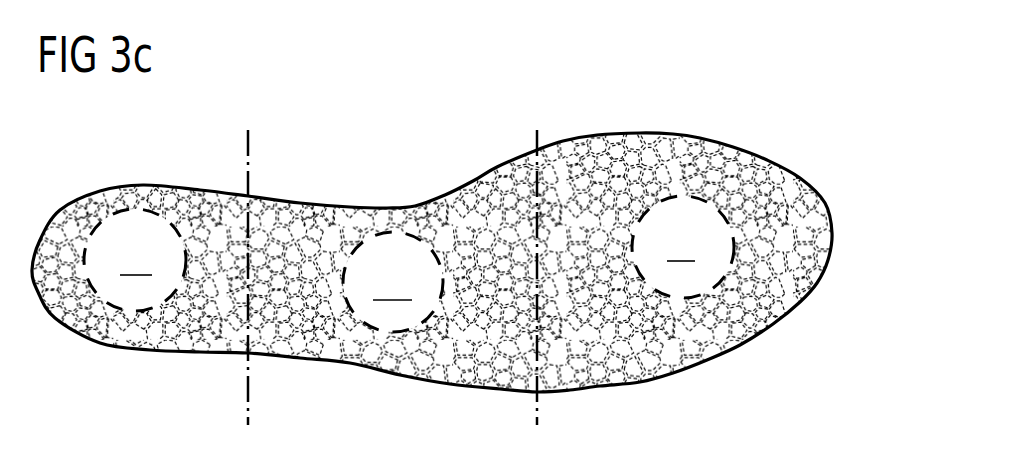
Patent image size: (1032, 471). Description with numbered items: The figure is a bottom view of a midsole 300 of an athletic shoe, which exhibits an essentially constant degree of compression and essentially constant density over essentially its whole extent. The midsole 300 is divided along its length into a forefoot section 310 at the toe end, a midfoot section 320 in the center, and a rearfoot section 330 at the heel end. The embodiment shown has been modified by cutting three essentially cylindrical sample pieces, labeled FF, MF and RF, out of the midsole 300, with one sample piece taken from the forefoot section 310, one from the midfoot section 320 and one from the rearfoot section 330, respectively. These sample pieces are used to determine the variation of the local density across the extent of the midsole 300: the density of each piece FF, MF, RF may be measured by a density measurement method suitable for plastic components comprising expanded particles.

The midsole 300 is at (393, 136).
The forefoot section 310 is at (677, 155).
The midfoot section 320 is at (447, 222).
The rearfoot section 330 is at (192, 220).